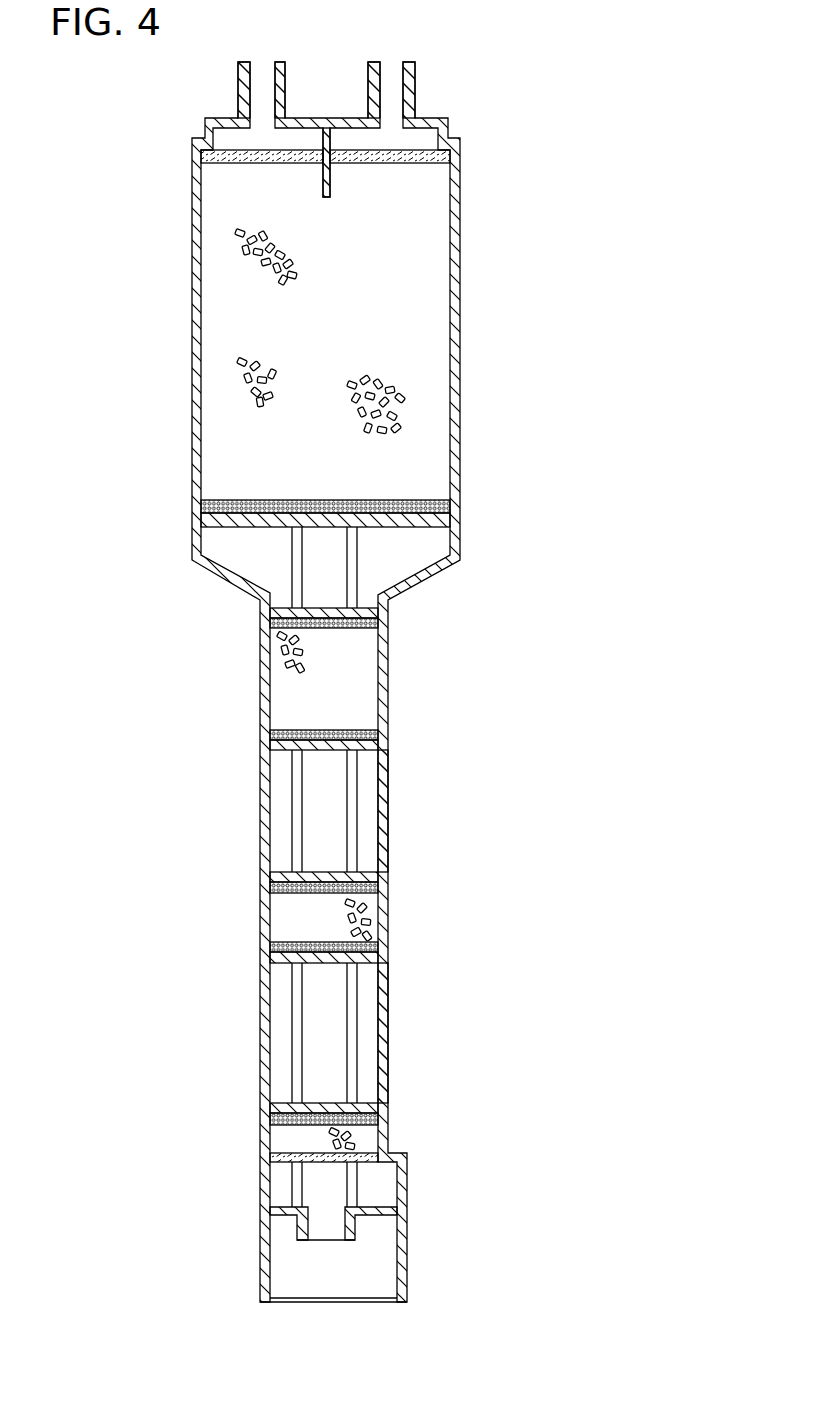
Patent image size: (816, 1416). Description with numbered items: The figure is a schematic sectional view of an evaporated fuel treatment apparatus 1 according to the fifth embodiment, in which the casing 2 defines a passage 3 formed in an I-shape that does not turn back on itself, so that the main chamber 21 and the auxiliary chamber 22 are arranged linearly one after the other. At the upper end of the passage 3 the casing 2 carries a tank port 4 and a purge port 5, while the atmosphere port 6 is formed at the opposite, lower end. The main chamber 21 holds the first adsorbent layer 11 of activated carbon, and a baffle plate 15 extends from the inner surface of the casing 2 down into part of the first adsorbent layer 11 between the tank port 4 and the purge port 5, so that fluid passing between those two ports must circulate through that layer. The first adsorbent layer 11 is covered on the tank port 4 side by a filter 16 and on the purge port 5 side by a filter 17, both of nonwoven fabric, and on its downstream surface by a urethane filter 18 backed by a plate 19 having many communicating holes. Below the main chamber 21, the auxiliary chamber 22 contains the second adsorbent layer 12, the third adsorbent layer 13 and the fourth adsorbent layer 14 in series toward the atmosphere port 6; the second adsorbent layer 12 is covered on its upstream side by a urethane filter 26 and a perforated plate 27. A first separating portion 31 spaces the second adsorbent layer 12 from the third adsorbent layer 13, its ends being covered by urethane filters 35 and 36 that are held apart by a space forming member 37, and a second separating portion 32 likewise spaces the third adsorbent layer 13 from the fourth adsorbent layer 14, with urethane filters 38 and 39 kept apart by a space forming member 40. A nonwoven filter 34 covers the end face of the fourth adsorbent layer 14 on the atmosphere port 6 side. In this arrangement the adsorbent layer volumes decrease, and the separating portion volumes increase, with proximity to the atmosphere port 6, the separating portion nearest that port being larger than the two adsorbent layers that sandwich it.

The evaporated fuel treatment apparatus 1 is at (187, 125).
The casing 2 is at (192, 365).
The passage 3 is at (218, 320).
The tank port 4 is at (262, 85).
The purge port 5 is at (385, 80).
The atmosphere port 6 is at (318, 1222).
The first adsorbent layer 11 is at (258, 208).
The second adsorbent layer 12 is at (283, 697).
The third adsorbent layer 13 is at (288, 915).
The fourth adsorbent layer 14 is at (277, 1137).
The baffle plate 15 is at (332, 198).
The filter 16 is at (275, 157).
The filter 17 is at (398, 157).
The filter 18 is at (290, 508).
The plate 19 is at (327, 513).
The main chamber 21 is at (218, 465).
The auxiliary chamber 22 is at (283, 1040).
The filter 26 is at (378, 620).
The plate 27 is at (270, 614).
The first separating portion 31 is at (365, 837).
The second separating portion 32 is at (365, 1078).
The filter 34 is at (268, 1160).
The filter 35 is at (270, 743).
The filter 36 is at (268, 882).
The space forming member 37 is at (355, 802).
The filter 38 is at (265, 955).
The filter 39 is at (268, 1112).
The space forming member 40 is at (354, 1003).